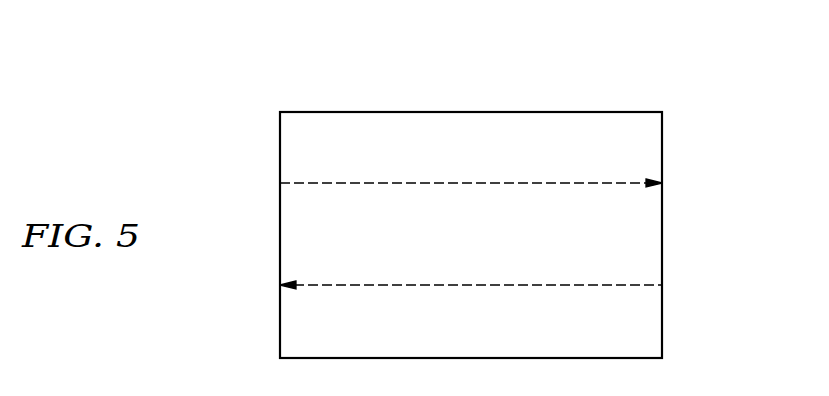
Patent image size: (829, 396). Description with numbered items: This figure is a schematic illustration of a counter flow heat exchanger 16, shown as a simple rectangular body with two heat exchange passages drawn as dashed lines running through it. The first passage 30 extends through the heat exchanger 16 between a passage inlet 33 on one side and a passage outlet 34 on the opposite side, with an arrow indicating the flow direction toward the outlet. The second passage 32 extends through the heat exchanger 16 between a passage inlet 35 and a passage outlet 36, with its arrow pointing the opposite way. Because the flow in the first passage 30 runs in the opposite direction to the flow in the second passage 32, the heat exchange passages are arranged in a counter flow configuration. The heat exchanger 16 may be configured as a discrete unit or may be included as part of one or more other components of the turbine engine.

The heat exchanger 16 is at (533, 112).
The second passage 32 is at (441, 183).
The first passage 30 is at (424, 286).
The passage inlet 35 is at (279, 183).
The passage outlet 36 is at (663, 183).
The passage outlet 34 is at (280, 285).
The passage inlet 33 is at (663, 285).